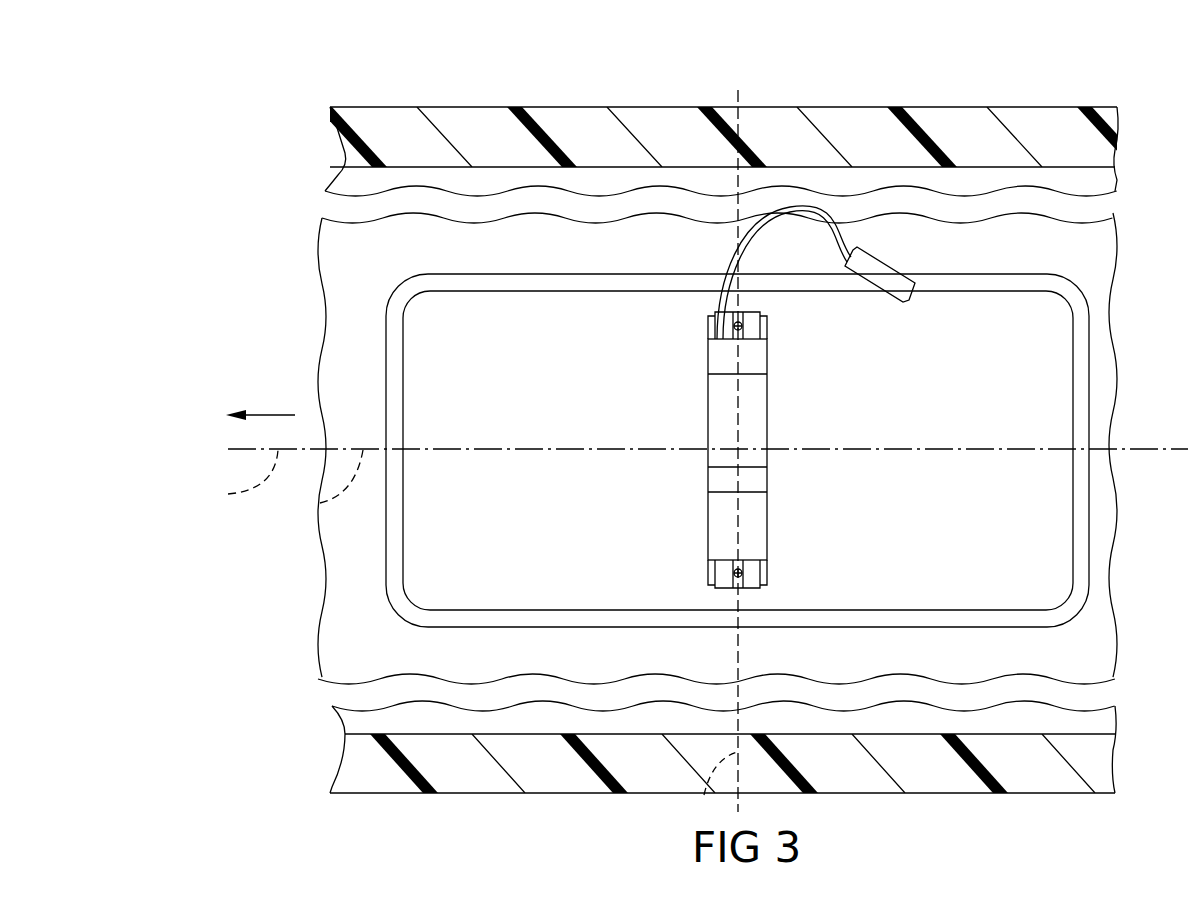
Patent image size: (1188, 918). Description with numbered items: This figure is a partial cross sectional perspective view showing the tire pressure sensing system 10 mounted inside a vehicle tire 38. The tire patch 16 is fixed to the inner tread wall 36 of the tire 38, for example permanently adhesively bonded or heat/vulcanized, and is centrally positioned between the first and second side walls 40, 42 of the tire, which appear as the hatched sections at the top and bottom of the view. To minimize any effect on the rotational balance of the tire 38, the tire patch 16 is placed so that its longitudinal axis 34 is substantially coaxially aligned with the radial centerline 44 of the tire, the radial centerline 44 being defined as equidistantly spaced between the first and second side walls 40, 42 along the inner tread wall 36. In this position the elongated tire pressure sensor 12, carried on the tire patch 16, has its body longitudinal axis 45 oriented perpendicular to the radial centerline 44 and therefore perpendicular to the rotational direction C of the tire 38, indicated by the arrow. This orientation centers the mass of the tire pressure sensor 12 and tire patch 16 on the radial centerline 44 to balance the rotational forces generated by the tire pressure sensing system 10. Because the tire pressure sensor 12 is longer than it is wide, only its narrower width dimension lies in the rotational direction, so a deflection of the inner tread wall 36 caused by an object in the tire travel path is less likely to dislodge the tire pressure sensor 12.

The tire pressure sensing system 10 is at (785, 672).
The tire pressure sensor 12 is at (717, 355).
The tire patch 16 is at (418, 561).
The longitudinal axis 34 is at (320, 503).
The inner tread wall 36 is at (337, 653).
The tire 38 is at (865, 97).
The first side wall 40 is at (345, 157).
The second side wall 42 is at (343, 775).
The radial centerline 44 is at (247, 444).
The body longitudinal axis 45 is at (704, 795).